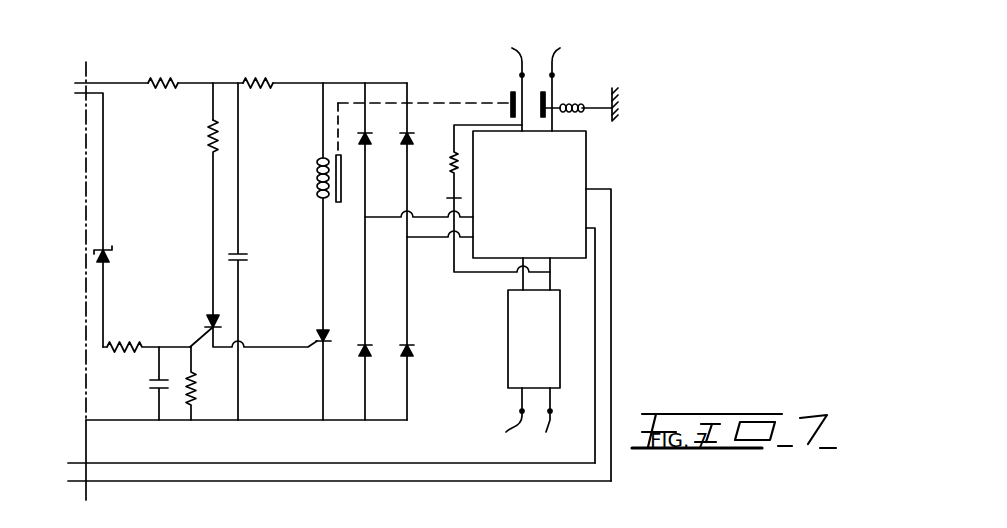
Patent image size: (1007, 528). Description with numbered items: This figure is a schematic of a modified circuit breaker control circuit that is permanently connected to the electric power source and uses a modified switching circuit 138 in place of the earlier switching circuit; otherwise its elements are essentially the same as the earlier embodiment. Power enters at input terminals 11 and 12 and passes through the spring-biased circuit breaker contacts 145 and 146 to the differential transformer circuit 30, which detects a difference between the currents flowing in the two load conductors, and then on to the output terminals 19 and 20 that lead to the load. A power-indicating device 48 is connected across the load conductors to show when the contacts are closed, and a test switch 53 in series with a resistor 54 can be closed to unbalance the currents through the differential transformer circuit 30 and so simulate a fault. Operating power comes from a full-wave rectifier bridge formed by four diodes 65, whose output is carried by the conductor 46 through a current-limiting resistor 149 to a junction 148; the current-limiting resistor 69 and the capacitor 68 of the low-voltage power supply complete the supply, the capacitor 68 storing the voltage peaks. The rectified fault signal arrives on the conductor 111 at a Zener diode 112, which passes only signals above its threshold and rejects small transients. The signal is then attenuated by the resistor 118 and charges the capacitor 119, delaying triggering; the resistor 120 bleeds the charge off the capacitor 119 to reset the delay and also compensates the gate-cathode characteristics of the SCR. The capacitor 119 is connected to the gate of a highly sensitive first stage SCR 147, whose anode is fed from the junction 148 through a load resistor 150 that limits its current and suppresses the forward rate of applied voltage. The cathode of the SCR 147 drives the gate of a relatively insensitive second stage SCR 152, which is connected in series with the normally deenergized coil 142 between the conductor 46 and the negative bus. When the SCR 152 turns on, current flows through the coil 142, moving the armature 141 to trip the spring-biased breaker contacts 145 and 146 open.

The resistor 69 is at (168, 82).
The junction 148 is at (213, 83).
The current-limiting resistor 149 is at (270, 83).
The conductor 46 is at (344, 83).
The input terminal 11 is at (510, 81).
The input terminal 12 is at (563, 81).
The spring-biased circuit breaker contact 145 is at (508, 94).
The spring-biased circuit breaker contact 146 is at (548, 104).
The load resistor 150 is at (208, 138).
The diodes 65 is at (400, 134).
The resistor 54 is at (450, 162).
The switch 53 is at (460, 200).
The differential transformer circuit 30 is at (578, 170).
The coil 142 is at (316, 193).
The armature 141 is at (344, 184).
The conductor 111 is at (104, 192).
The Zener diode 112 is at (105, 256).
The capacitor 68 is at (245, 257).
The first stage SCR 147 is at (211, 318).
The second stage SCR 152 is at (326, 332).
The resistor 118 is at (126, 345).
The power-indicating device 48 is at (508, 330).
The capacitor 119 is at (155, 393).
The resistor 120 is at (198, 392).
The switching circuit 138 is at (317, 410).
The output terminal 19 is at (504, 417).
The output terminal 20 is at (546, 417).